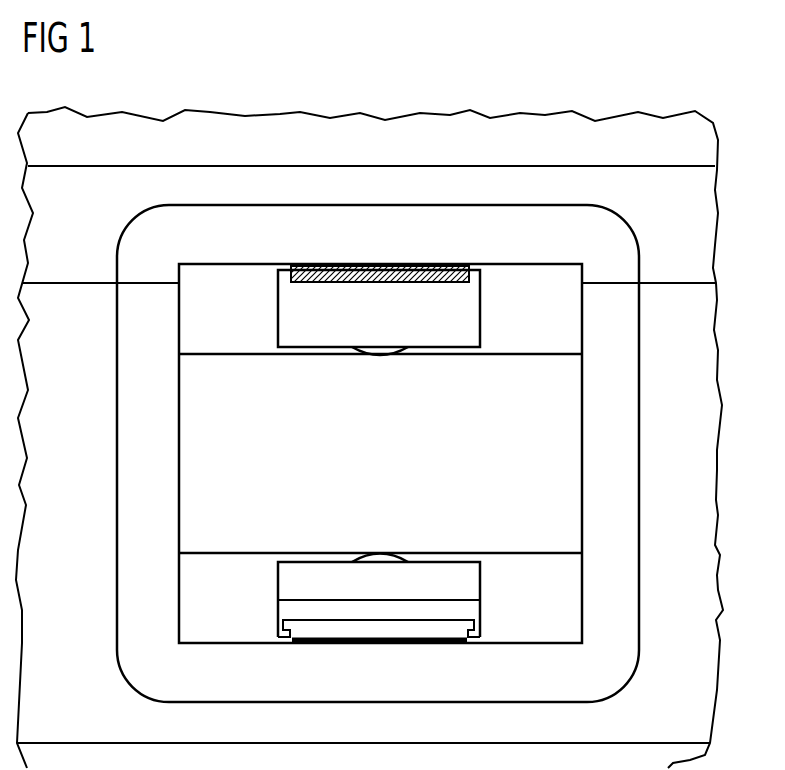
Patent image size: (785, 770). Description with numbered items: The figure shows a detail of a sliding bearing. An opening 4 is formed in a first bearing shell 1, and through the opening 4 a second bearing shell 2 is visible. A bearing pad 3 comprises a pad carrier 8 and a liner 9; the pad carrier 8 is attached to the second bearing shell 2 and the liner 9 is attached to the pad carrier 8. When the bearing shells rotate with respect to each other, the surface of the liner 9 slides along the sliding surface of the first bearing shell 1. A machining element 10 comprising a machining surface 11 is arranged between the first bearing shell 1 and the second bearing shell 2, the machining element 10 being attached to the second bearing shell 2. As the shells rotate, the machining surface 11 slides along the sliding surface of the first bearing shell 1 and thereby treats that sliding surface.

The first bearing shell 1 is at (708, 437).
The second bearing shell 2 is at (570, 470).
The bearing pad 3 is at (278, 600).
The opening 4 is at (583, 418).
The pad carrier 8 is at (470, 580).
The liner 9 is at (383, 630).
The machining element 10 is at (419, 348).
The machining surface 11 is at (380, 265).